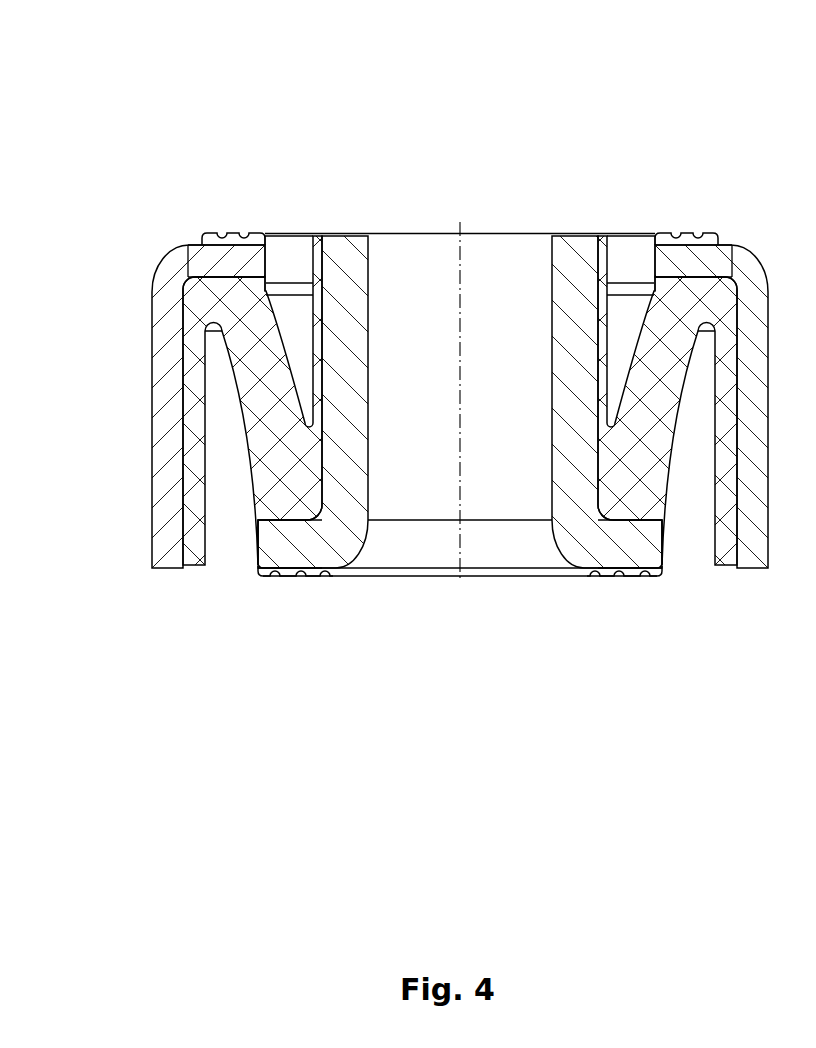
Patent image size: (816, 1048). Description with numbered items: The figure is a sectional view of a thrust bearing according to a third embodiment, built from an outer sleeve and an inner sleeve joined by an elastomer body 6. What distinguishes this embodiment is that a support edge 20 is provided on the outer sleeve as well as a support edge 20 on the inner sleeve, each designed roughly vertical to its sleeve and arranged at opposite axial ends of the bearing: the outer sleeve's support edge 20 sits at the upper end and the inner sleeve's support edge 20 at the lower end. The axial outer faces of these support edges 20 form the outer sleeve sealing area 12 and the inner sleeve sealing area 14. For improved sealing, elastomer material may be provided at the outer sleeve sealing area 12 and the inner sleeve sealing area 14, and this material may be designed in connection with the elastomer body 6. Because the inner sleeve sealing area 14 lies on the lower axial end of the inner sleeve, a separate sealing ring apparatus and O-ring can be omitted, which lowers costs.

The elastomer body 6 is at (270, 405).
The outer sleeve sealing area 12 is at (230, 232).
The inner sleeve sealing area 14 is at (288, 573).
The support edge 20 is at (220, 262).